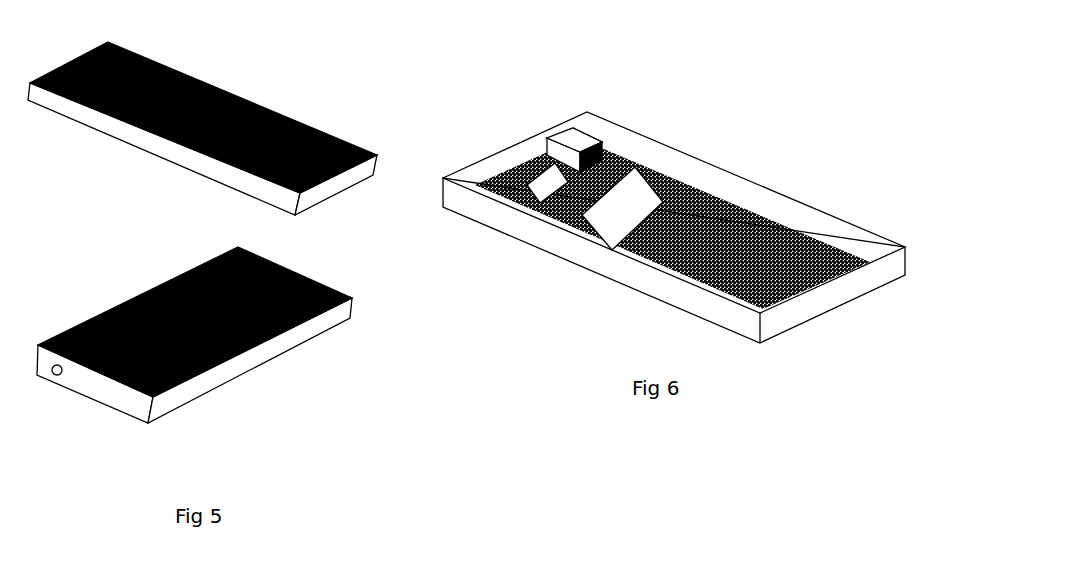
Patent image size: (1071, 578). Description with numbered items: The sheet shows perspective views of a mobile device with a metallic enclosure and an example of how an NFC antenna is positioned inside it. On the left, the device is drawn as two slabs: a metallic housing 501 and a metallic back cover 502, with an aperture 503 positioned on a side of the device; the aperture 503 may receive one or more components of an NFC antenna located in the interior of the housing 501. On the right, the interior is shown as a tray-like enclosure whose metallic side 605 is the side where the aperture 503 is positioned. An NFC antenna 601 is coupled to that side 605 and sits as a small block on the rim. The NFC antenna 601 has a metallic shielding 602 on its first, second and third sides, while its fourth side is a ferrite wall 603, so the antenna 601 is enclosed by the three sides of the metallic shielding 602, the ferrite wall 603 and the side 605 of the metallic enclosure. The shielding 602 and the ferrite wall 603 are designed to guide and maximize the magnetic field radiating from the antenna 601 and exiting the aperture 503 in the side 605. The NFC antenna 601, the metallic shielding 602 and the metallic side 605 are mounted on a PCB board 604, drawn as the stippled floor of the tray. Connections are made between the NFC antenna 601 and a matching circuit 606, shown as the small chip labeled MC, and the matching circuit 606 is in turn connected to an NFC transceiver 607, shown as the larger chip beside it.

In FIG. 5, the metallic housing 501 is at (340, 187).
In FIG. 5, the metallic back cover 502 is at (163, 142).
In FIG. 5, the aperture 503 is at (63, 373).
In FIG. 6, the aperture 503 is at (532, 132).
In FIG. 6, the NFC antenna 601 is at (580, 130).
In FIG. 6, the metallic shielding 602 is at (570, 140).
In FIG. 6, the ferrite wall 603 is at (603, 150).
In FIG. 6, the PCB board 604 is at (735, 233).
In FIG. 6, the side of the mobile device enclosure 605 is at (508, 160).
In FIG. 6, the matching circuit 606 is at (557, 200).
In FIG. 6, the NFC transceiver 607 is at (597, 238).